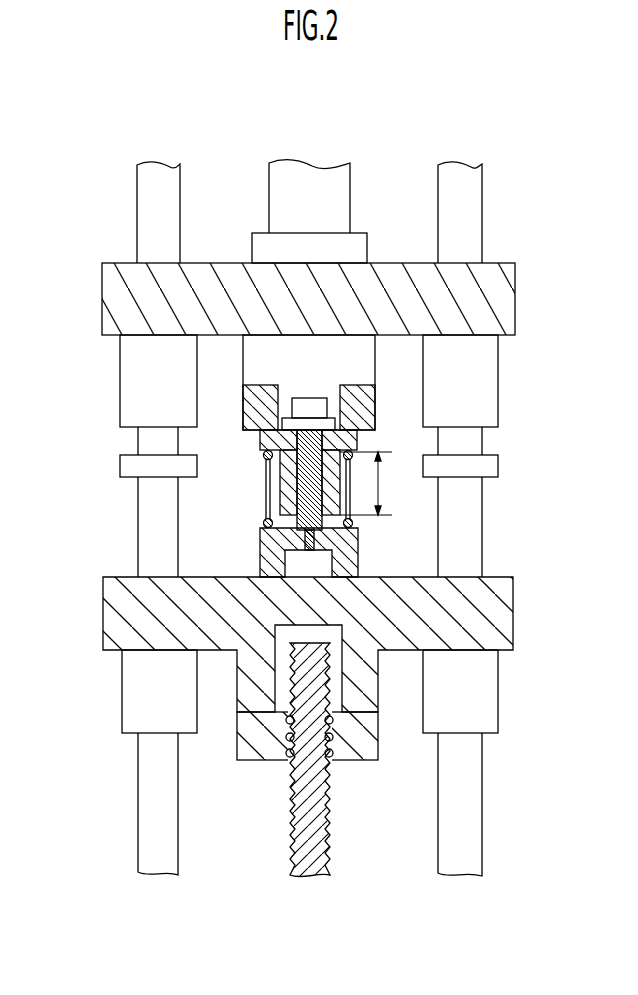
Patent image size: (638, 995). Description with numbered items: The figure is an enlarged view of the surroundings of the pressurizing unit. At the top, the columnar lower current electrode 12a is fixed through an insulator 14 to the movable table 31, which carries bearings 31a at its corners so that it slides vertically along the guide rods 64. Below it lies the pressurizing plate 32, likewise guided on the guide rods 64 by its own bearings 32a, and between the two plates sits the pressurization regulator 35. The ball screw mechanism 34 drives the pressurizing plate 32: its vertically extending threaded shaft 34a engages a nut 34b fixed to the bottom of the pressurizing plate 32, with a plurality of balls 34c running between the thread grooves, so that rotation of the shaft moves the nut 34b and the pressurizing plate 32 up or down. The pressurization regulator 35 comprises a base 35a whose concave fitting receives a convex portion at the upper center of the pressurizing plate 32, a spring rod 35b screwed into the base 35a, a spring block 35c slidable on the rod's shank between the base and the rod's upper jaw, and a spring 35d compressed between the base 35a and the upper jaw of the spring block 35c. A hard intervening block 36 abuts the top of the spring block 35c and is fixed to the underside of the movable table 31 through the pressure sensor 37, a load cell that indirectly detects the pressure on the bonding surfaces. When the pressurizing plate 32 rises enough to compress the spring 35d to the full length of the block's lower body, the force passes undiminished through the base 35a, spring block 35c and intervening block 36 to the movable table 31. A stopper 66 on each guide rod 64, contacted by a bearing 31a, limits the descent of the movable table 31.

The lower current electrode 12a is at (311, 172).
The insulator 14 is at (267, 252).
The movable table 31 is at (122, 305).
The bearings 31a is at (143, 383).
The pressurizing plate 32 is at (118, 606).
The bearings 32a is at (133, 692).
The ball screw mechanism 34 is at (376, 760).
The threaded shaft 34a is at (329, 838).
The nut 34b is at (250, 765).
The balls 34c is at (345, 798).
The pressurization regulator 35 is at (306, 487).
The base 35a is at (262, 552).
The spring rod 35b is at (297, 480).
The spring block 35c is at (260, 438).
The spring 35d is at (285, 504).
The intervening block 36 is at (376, 430).
The pressure sensor 37 is at (362, 358).
The guide rods 64 is at (152, 193).
The stopper 66 is at (128, 465).